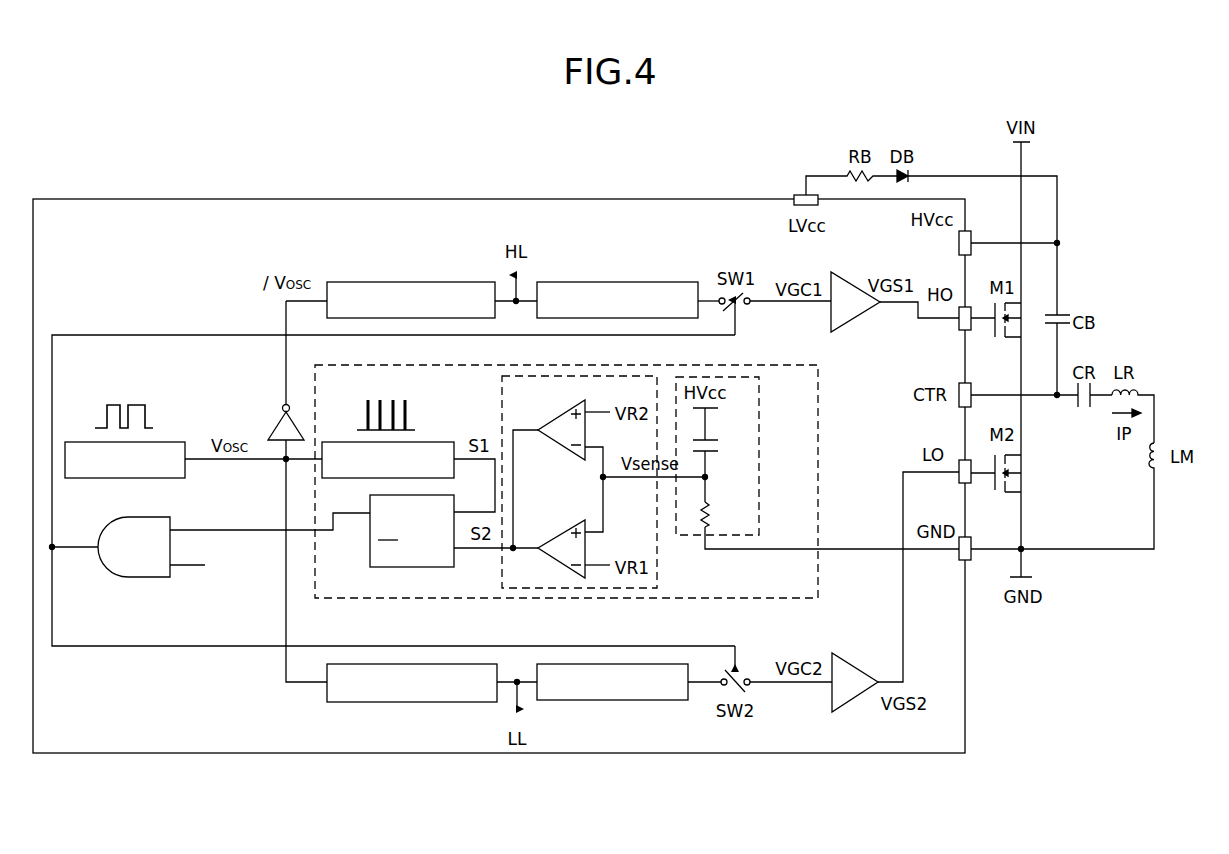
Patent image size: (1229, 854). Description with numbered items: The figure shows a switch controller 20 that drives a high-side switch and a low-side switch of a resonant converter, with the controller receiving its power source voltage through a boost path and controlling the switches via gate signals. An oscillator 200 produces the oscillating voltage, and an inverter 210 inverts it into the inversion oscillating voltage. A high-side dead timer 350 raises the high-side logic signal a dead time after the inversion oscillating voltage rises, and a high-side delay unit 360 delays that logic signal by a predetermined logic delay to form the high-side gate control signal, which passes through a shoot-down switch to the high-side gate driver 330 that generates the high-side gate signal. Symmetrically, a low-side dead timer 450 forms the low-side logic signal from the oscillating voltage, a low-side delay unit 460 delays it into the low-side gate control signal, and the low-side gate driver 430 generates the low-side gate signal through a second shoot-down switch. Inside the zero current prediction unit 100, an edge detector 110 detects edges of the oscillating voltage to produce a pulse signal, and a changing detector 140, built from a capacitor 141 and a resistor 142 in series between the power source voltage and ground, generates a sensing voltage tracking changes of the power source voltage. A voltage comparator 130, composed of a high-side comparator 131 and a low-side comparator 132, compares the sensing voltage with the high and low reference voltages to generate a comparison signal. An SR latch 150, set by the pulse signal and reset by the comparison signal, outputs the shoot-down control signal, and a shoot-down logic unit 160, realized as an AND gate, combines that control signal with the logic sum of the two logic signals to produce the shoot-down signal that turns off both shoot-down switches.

The switch controller 20 is at (900, 755).
The zero current prediction unit 100 is at (818, 583).
The edge detector 110 is at (436, 442).
The voltage comparator 130 is at (657, 572).
The high-side comparator 131 is at (563, 524).
The low-side comparator 132 is at (563, 406).
The changing detector 140 is at (759, 449).
The capacitor 141 is at (722, 450).
The resistor 142 is at (723, 514).
The SR latch 150 is at (388, 568).
The shoot-down logic unit 160 is at (145, 580).
The oscillator 200 is at (132, 479).
The inverter 210 is at (276, 428).
The high-side gate driver 330 is at (848, 278).
The high-side dead timer 350 is at (408, 282).
The high-side delay unit 360 is at (595, 282).
The low-side gate driver 430 is at (860, 670).
The low-side dead timer 450 is at (408, 702).
The low-side delay unit 460 is at (594, 700).